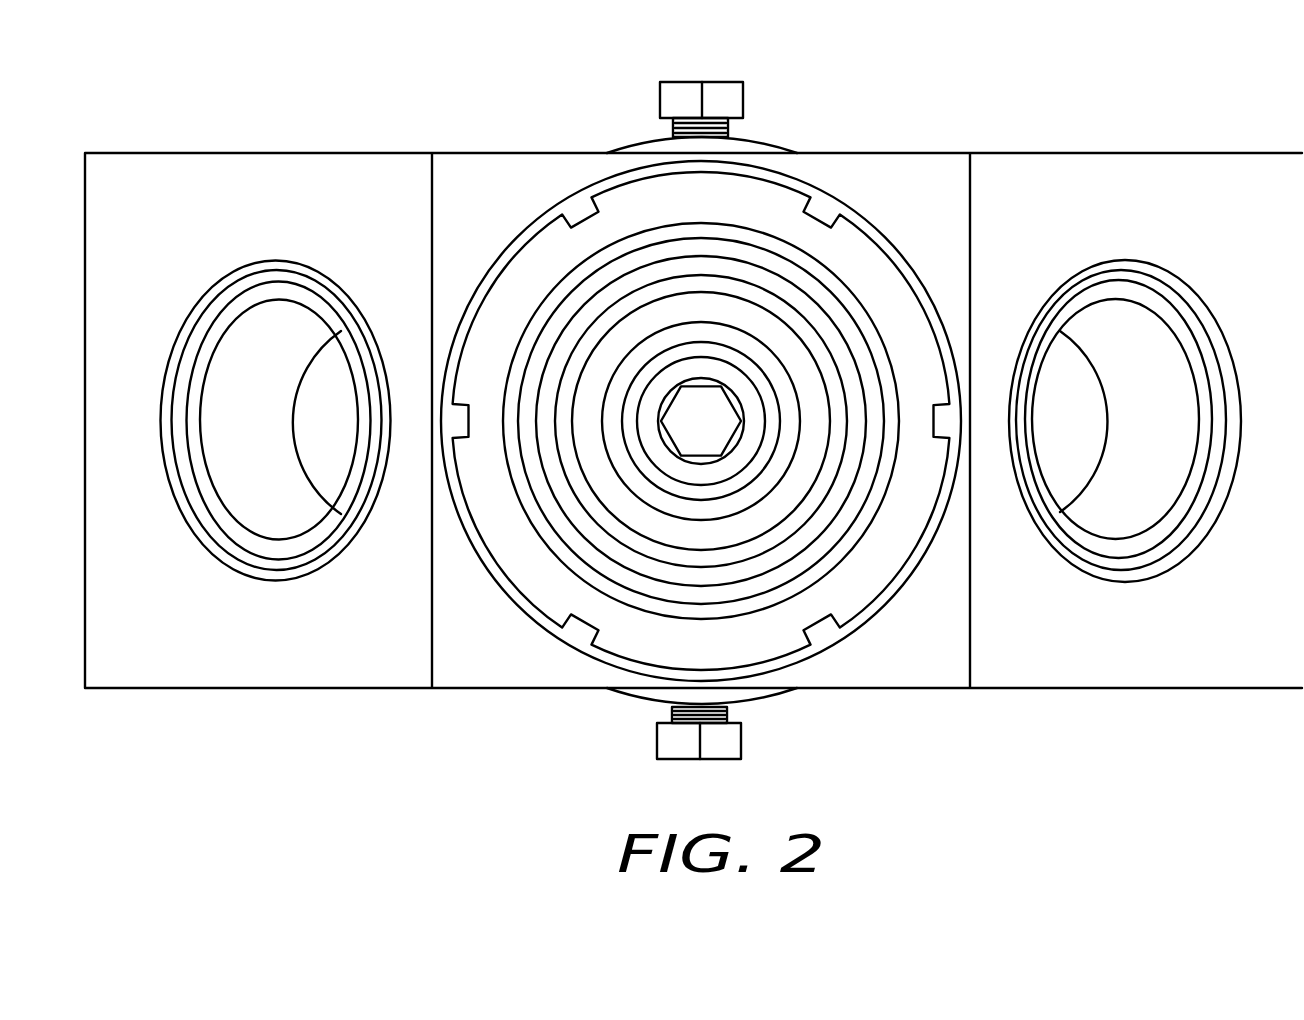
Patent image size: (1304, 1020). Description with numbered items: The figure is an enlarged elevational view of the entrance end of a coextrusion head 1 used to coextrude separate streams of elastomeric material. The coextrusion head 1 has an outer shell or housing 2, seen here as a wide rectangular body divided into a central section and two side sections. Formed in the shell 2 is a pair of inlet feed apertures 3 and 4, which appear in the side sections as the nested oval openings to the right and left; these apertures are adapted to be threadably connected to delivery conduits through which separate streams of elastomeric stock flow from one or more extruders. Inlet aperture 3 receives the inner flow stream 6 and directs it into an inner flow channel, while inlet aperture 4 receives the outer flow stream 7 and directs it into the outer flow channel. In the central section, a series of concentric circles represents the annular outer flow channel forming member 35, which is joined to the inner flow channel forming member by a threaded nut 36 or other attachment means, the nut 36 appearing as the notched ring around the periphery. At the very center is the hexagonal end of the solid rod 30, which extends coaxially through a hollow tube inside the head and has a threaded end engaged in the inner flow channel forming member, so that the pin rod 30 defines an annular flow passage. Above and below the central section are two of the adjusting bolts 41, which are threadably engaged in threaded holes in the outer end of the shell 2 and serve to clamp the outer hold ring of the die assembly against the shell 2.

The coextrusion head 1 is at (918, 90).
The outer shell or housing 2 is at (487, 197).
The inlet feed aperture 3 is at (1177, 462).
The inlet feed aperture 4 is at (243, 499).
The inner flow stream 6 is at (1145, 320).
The outer flow stream 7 is at (273, 327).
The solid rod 30 is at (692, 438).
The annular outer flow channel forming member 35 is at (505, 422).
The threaded nut 36 is at (877, 287).
The adjusting bolts 41 is at (716, 98).